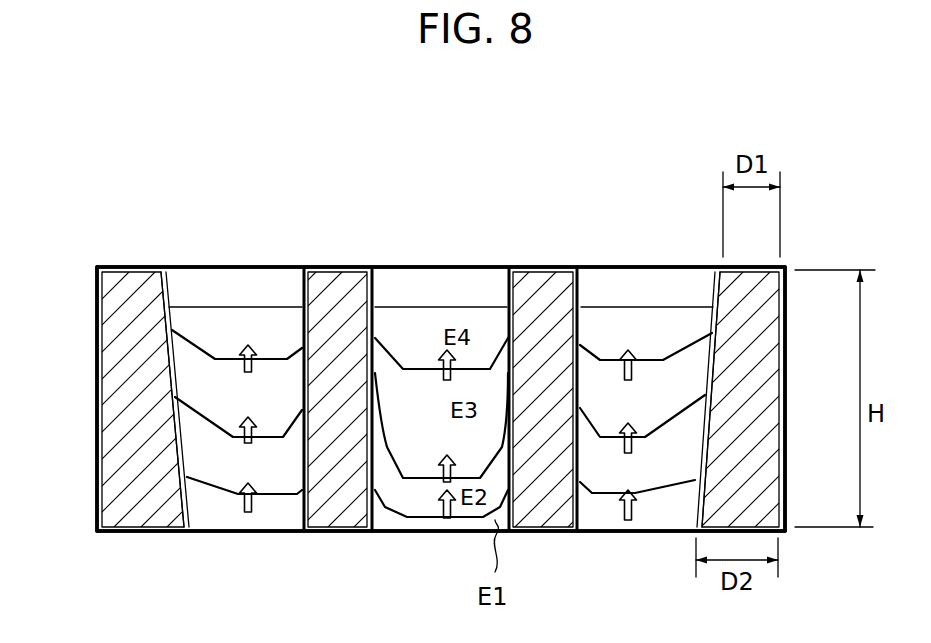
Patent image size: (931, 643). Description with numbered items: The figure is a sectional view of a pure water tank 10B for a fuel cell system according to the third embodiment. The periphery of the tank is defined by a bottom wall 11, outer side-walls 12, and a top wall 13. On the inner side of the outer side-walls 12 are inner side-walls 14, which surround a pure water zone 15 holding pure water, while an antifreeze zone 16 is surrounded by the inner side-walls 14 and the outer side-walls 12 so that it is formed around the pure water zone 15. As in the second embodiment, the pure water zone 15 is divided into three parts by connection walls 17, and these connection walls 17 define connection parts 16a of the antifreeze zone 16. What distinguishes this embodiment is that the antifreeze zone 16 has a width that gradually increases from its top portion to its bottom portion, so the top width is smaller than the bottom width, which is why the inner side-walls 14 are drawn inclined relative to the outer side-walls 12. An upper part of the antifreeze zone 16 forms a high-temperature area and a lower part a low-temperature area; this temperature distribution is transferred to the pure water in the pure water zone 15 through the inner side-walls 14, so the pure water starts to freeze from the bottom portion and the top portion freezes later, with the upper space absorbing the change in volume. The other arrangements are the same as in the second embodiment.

The pure water tank 10B is at (129, 222).
The bottom wall 11 is at (428, 532).
The outer side-walls 12 is at (99, 403).
The top wall 13 is at (470, 267).
The inner side-walls 14 is at (176, 273).
The pure water zone 15 is at (225, 287).
The antifreeze zone 16 is at (122, 340).
The connection parts 16a is at (333, 497).
The connection walls 17 is at (301, 284).